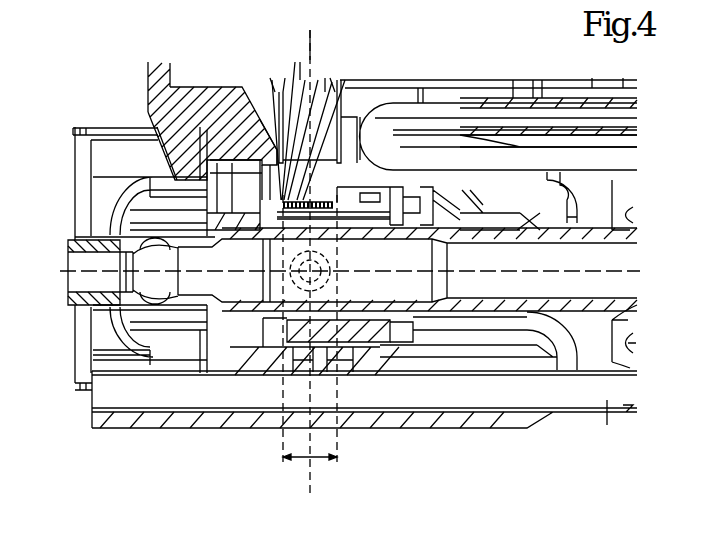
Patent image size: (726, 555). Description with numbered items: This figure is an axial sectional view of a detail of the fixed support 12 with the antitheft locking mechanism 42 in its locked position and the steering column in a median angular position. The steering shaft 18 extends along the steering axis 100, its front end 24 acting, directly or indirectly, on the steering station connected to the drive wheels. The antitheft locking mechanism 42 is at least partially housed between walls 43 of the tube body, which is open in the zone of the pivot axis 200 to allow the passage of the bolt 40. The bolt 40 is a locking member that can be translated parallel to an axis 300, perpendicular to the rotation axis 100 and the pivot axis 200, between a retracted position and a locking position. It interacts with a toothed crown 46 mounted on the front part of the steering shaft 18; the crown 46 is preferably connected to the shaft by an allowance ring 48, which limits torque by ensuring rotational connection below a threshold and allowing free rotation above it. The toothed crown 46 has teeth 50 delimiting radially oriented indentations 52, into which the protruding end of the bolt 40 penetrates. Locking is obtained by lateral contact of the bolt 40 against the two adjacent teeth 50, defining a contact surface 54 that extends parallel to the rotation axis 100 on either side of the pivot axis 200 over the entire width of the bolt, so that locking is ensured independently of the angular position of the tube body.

The fixed support 12 is at (140, 428).
The steering shaft 18 is at (625, 212).
The front end 24 is at (97, 246).
The bolt 40 is at (293, 108).
The antitheft locking mechanism 42 is at (232, 82).
The walls 43 is at (173, 80).
The toothed crown 46 is at (398, 342).
The allowance ring 48 is at (455, 128).
The teeth 50 is at (373, 336).
The indentations 52 is at (350, 207).
The contact surface 54 is at (345, 137).
The steering axis 100 is at (622, 265).
The pivot axis 200 is at (335, 30).
The axis 300 is at (310, 477).